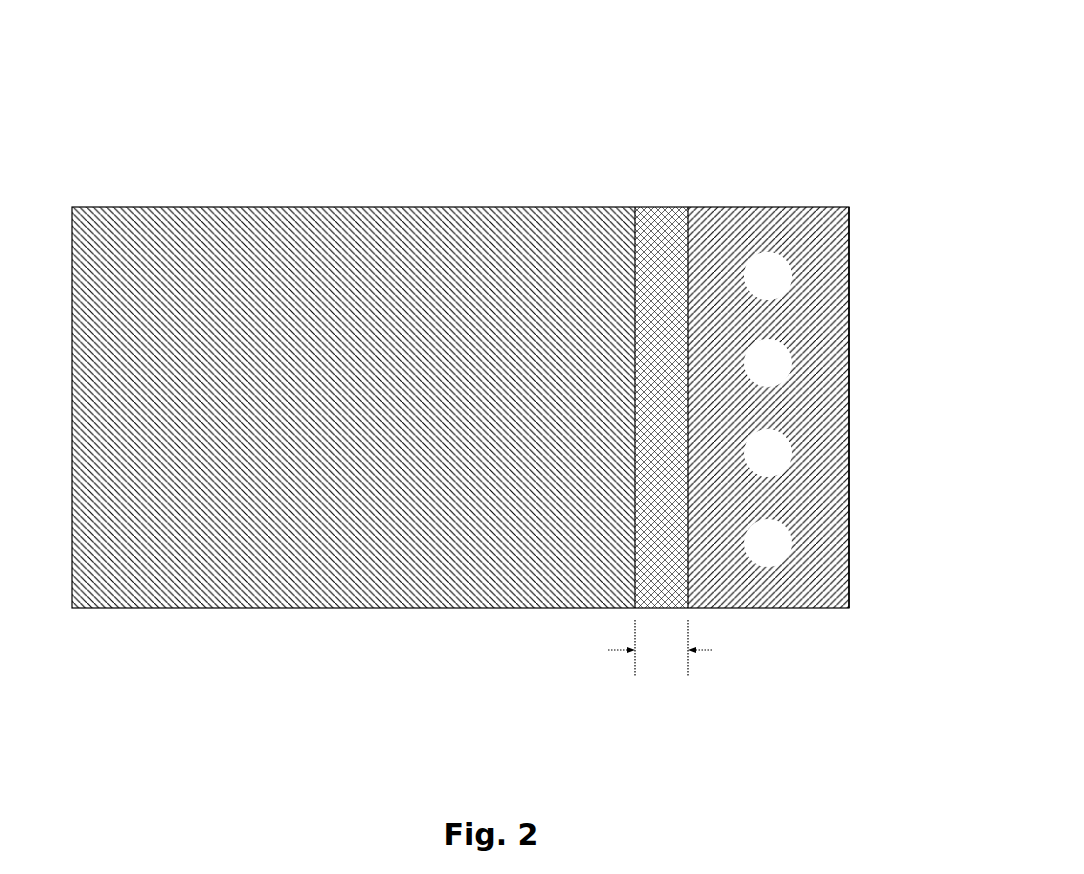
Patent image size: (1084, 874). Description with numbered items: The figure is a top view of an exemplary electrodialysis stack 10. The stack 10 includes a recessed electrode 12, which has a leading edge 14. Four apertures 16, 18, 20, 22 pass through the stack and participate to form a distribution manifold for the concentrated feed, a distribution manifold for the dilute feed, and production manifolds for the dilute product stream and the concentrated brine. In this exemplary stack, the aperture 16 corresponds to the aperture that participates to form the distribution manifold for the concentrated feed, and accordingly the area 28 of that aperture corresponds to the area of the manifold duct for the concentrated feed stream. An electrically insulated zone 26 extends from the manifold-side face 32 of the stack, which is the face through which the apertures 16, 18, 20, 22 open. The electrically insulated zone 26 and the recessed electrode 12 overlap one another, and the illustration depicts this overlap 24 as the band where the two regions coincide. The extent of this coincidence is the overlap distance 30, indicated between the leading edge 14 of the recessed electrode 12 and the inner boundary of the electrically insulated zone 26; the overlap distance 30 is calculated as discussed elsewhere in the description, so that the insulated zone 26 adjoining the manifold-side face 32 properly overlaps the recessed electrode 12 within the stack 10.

The electrodialysis stack 10 is at (288, 172).
The recessed electrode 12 is at (260, 552).
The leading edge 14 is at (683, 355).
The aperture 16 is at (793, 277).
The aperture 18 is at (793, 363).
The aperture 20 is at (793, 453).
The aperture 22 is at (793, 543).
The overlap 24 is at (667, 237).
The electrically insulated zone 26 is at (740, 585).
The area 28 is at (768, 276).
The overlap distance 30 is at (643, 648).
The manifold-side face 32 is at (848, 585).